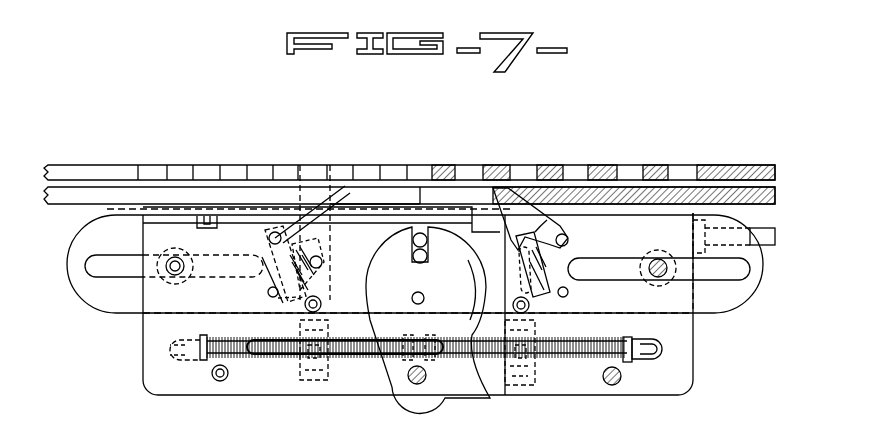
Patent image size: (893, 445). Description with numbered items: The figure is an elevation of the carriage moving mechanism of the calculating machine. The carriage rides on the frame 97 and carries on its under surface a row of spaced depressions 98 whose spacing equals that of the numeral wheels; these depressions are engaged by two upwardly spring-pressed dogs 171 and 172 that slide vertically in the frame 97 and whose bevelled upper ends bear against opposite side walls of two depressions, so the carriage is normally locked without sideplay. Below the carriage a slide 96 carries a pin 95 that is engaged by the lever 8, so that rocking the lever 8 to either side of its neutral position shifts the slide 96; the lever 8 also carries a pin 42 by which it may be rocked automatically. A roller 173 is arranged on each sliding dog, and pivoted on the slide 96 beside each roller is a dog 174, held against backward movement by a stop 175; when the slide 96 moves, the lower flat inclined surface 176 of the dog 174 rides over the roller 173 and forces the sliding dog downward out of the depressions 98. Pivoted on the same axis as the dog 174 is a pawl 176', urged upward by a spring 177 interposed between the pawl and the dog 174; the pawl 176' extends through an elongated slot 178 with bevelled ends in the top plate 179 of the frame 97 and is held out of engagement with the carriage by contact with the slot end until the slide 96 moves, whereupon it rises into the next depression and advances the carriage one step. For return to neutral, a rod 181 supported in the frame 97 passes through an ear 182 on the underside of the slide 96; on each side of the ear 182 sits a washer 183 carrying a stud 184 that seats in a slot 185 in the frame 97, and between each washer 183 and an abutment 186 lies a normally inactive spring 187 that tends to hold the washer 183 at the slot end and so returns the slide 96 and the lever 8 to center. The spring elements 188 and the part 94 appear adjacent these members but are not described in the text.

The dog 171 is at (323, 180).
The top plate 179 is at (378, 192).
The elongated slot 178 is at (460, 197).
The dog 172 is at (516, 184).
The depressions 98 is at (628, 175).
The lower flat inclined surface 176 is at (268, 259).
The pawl 176' is at (569, 225).
The spring 177 is at (520, 246).
The dog 174 is at (268, 266).
The stop 175 is at (268, 291).
The roller 173 is at (321, 304).
The spring 188 is at (322, 262).
The pin 95 is at (413, 242).
The roller 94 is at (414, 258).
The lever 8 is at (455, 285).
The pin 42 is at (424, 298).
The frame 97 is at (143, 338).
The slide 96 is at (700, 306).
The stud 184 is at (407, 340).
The ear 182 is at (438, 333).
The washer 183 is at (398, 362).
The slot 185 is at (272, 348).
The rod 181 is at (539, 305).
The abutment 186 is at (630, 357).
The spring 187 is at (600, 368).